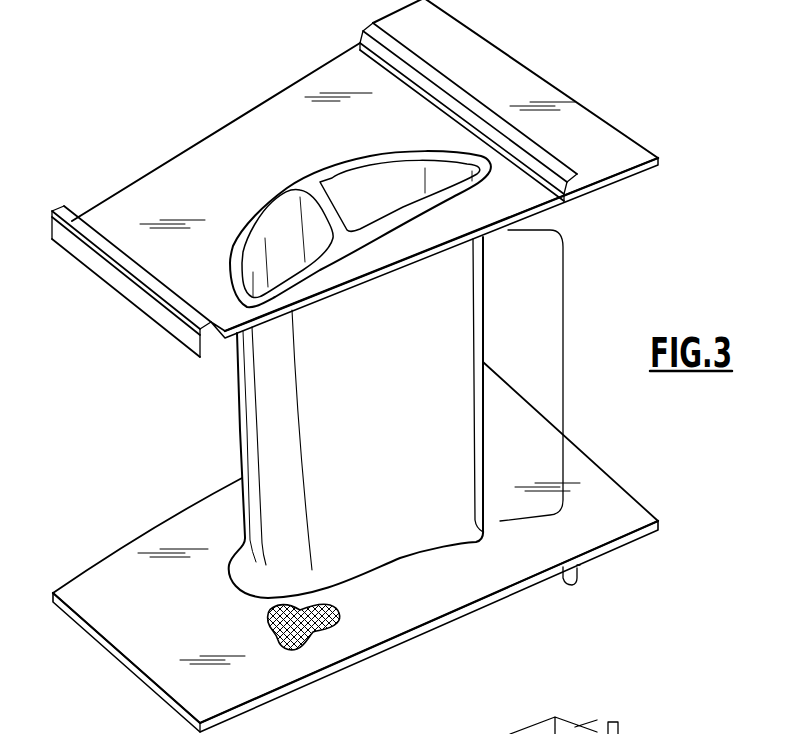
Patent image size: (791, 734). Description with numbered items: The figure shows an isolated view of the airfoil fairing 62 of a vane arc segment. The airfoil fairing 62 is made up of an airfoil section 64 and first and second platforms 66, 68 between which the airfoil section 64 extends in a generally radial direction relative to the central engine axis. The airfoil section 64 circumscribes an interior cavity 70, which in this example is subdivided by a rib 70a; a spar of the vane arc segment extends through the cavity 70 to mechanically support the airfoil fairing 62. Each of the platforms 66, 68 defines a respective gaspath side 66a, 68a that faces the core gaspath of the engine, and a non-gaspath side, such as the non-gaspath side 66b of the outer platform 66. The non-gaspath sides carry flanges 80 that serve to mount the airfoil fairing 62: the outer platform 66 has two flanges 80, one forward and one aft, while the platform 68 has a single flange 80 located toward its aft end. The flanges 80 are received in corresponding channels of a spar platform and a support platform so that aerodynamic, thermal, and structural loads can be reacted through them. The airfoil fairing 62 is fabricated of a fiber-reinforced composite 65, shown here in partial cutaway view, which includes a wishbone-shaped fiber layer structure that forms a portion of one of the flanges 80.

The airfoil fairing 62 is at (171, 434).
The airfoil section 64 is at (562, 360).
The fiber-reinforced composite 65 is at (332, 628).
The first platform 66 is at (105, 200).
The gaspath side 66a is at (633, 732).
The non-gaspath side 66b is at (507, 60).
The second platform 68 is at (73, 618).
The gaspath side 68a is at (203, 672).
The interior cavity 70 is at (292, 249).
The rib 70a is at (327, 210).
The flange 80 is at (372, 28).